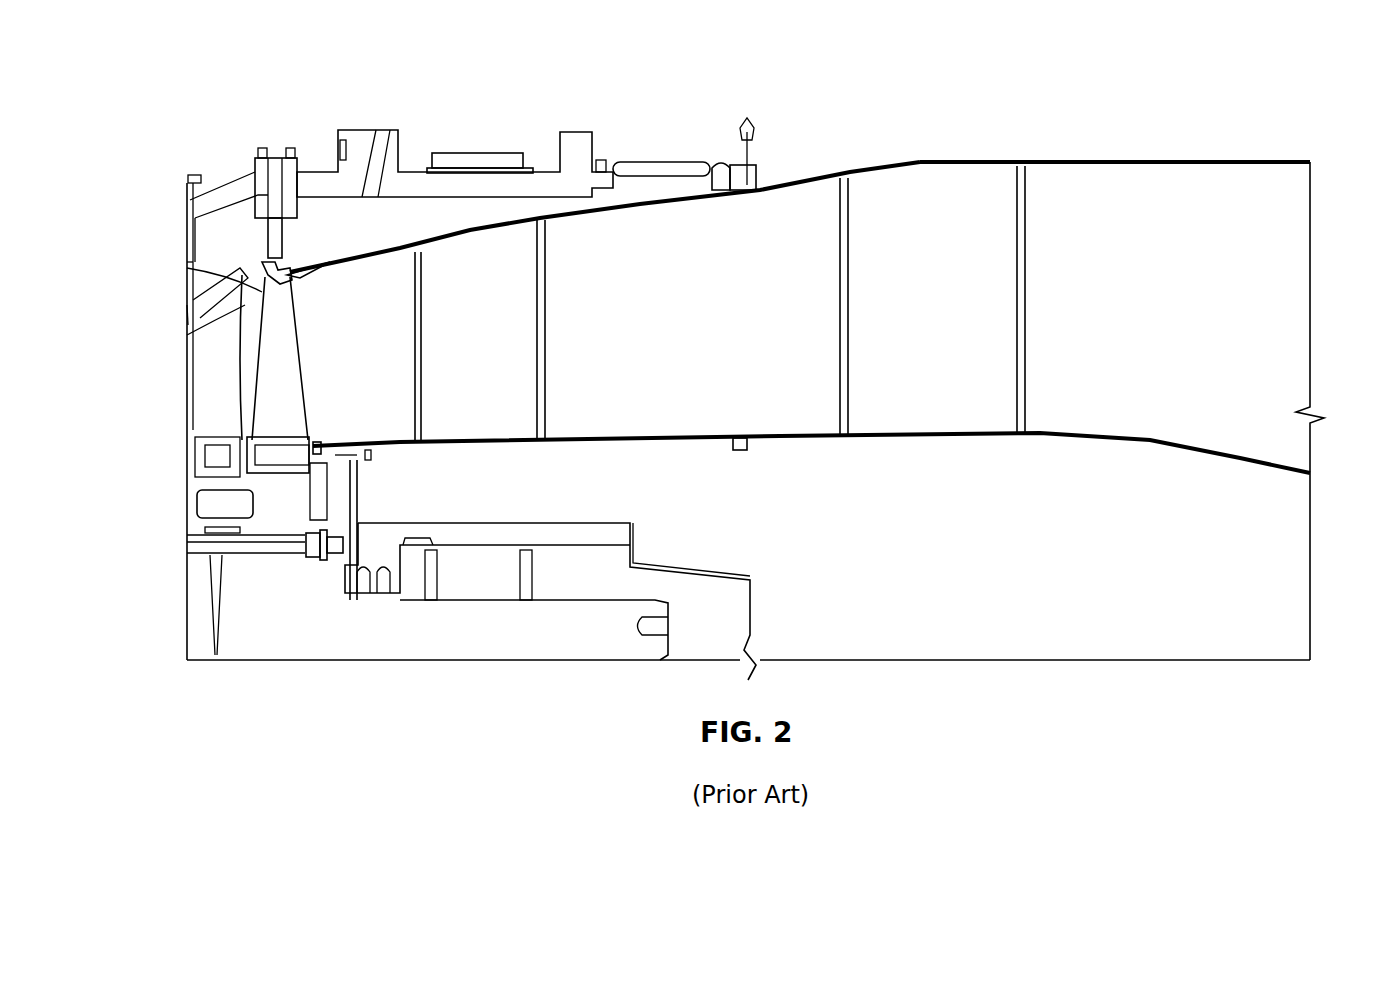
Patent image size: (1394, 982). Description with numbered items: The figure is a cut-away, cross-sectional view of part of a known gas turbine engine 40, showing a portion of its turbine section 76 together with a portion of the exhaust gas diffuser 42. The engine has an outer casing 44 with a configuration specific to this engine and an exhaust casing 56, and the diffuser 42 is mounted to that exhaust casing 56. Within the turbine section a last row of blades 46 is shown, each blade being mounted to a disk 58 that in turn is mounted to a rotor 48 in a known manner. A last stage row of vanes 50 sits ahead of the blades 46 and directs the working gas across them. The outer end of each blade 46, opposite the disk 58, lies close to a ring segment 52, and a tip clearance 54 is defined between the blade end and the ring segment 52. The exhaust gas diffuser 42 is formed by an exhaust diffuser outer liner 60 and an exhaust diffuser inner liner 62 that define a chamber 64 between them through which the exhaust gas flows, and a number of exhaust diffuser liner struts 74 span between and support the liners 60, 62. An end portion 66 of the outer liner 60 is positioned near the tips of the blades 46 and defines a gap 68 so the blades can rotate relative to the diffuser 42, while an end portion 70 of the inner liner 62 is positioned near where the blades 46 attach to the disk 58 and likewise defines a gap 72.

The gas turbine engine 40 is at (1064, 97).
The exhaust gas diffuser 42 is at (1116, 156).
The outer casing 44 is at (322, 183).
The blades 46 is at (290, 400).
The rotor 48 is at (447, 640).
The last stage row of vanes 50 is at (213, 400).
The ring segment 52 is at (258, 264).
The tip clearance 54 is at (244, 290).
The exhaust casing 56 is at (475, 185).
The disk 58 is at (270, 525).
The exhaust diffuser outer liner 60 is at (790, 180).
The exhaust diffuser inner liner 62 is at (665, 435).
The chamber 64 is at (1300, 245).
The end portion of the outer liner 66 is at (303, 262).
The gap 68 is at (298, 280).
The end portion of the inner liner 70 is at (330, 455).
The gap 72 is at (312, 443).
The exhaust diffuser liner struts 74 is at (1005, 245).
The turbine section 76 is at (172, 277).